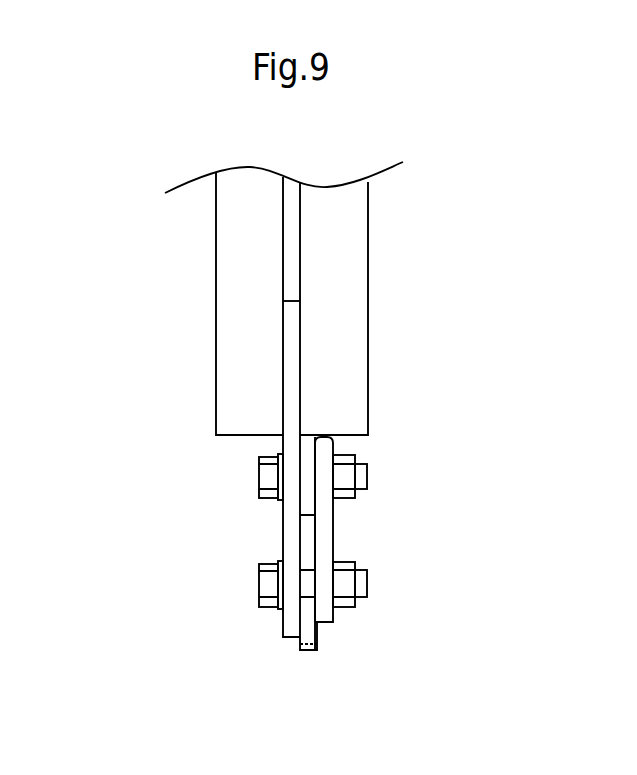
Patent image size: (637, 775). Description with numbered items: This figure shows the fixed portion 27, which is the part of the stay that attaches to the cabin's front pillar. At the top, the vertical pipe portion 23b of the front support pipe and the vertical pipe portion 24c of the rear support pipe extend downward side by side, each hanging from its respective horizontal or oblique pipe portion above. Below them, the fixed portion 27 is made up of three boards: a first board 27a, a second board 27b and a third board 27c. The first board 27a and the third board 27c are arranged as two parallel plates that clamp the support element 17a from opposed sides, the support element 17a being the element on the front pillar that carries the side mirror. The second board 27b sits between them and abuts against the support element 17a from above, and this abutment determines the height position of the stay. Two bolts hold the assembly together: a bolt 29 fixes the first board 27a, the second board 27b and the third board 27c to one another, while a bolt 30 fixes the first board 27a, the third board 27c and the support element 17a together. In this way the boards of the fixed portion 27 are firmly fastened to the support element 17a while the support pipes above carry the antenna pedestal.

The vertical pipe portion 23b is at (233, 303).
The vertical pipe portion 24c is at (352, 307).
The fixed portion 27 is at (286, 424).
The first board 27a is at (285, 543).
The second board 27b is at (310, 505).
The third board 27c is at (332, 615).
The bolt 29 is at (268, 473).
The bolt 30 is at (268, 595).
The support element 17a is at (307, 650).